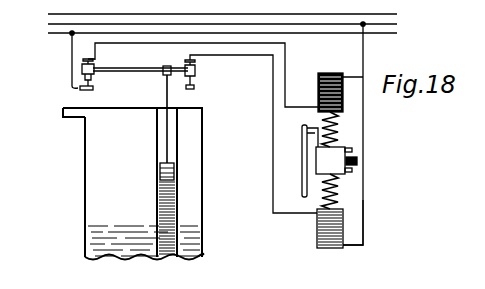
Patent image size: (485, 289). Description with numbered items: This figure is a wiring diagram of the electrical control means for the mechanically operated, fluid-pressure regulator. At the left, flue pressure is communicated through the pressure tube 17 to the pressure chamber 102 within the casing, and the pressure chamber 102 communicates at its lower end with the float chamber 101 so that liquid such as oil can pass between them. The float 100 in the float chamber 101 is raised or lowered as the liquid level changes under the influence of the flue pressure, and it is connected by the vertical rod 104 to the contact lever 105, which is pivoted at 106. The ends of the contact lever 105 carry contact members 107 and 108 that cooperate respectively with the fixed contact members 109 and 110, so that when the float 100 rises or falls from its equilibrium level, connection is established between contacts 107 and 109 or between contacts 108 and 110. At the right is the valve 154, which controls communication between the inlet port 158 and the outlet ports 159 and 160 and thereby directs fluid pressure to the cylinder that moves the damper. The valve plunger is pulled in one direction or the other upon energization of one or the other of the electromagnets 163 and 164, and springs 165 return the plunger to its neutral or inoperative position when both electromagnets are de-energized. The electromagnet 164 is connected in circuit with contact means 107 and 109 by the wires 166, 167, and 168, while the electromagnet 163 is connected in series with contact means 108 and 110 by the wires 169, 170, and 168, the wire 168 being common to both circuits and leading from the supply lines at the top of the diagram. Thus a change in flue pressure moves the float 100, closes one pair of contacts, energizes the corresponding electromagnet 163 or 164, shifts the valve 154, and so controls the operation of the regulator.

The pressure tube 17 is at (72, 122).
The float 100 is at (174, 163).
The float chamber 101 is at (177, 208).
The pressure chamber 102 is at (133, 184).
The vertical rod 104 is at (168, 131).
The contact lever 105 is at (140, 79).
The pivot 106 is at (138, 77).
The contact member 107 is at (106, 69).
The contact member 108 is at (197, 78).
The fixed contact member 109 is at (78, 89).
The fixed contact member 110 is at (196, 89).
The valve 154 is at (323, 161).
The inlet port 158 is at (358, 160).
The outlet port 159 is at (353, 171).
The outlet port 160 is at (352, 149).
The electromagnet 163 is at (318, 232).
The electromagnet 164 is at (318, 86).
The springs 165 is at (323, 198).
The wire 166 is at (355, 74).
The wire 167 is at (141, 45).
The wire 168 is at (72, 55).
The wire 169 is at (343, 242).
The wire 170 is at (273, 178).